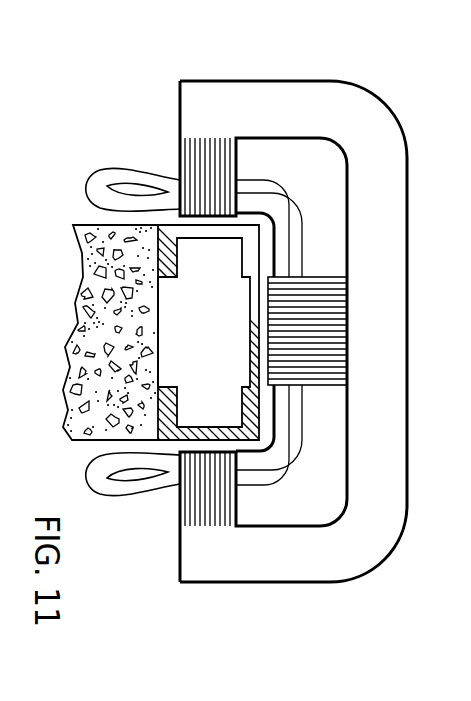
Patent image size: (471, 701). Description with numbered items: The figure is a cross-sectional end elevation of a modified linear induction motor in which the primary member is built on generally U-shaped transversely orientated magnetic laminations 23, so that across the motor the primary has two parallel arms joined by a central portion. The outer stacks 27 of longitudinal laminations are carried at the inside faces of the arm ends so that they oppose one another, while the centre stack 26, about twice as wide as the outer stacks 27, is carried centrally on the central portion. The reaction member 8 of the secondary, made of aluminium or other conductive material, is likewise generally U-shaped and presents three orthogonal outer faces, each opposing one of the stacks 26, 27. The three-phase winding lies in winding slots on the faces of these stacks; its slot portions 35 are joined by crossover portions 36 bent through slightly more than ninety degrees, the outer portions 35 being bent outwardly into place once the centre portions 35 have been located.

The reaction member 8 is at (157, 413).
The transversely orientated magnetic laminations 23 is at (362, 357).
The centre stack 26 is at (343, 370).
The outer stacks 27 is at (196, 160).
The winding conductor slot portions 35 is at (237, 178).
The crossover portions 36 is at (282, 219).